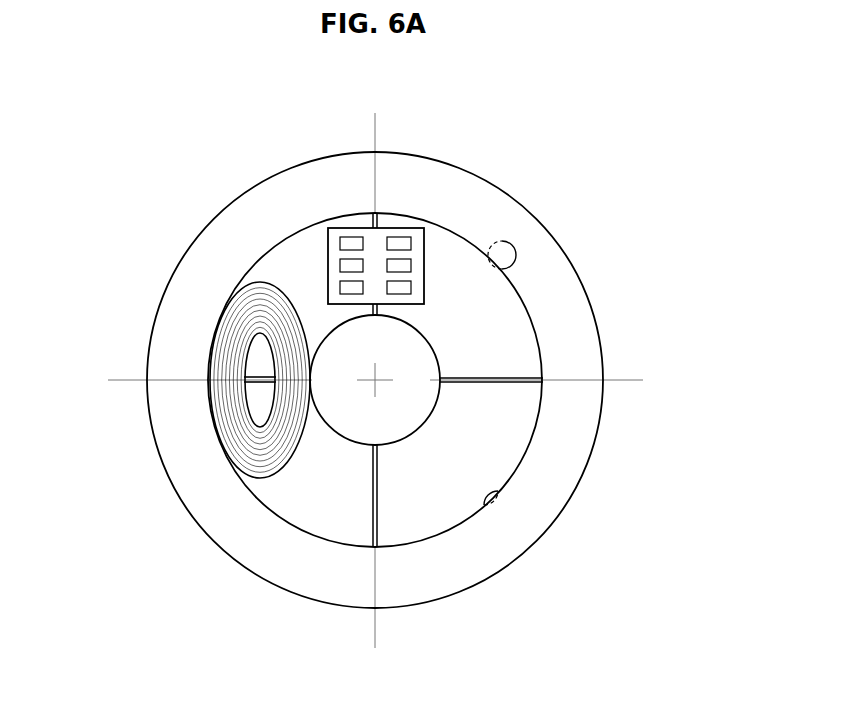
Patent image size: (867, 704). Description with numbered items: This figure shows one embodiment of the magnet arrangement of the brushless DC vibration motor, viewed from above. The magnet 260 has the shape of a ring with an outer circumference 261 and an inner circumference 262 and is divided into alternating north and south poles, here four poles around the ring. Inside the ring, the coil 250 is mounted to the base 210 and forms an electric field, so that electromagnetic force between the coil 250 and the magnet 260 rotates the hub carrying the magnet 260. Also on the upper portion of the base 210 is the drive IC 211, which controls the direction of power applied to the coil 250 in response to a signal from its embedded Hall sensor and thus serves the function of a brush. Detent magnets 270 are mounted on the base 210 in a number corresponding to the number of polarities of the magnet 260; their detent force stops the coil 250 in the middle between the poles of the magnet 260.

The base 210 is at (477, 557).
The drive IC 211 is at (352, 234).
The coil 250 is at (233, 338).
The magnet 260 is at (294, 254).
The outer circumference 261 is at (525, 298).
The inner circumference 262 is at (430, 366).
The detent magnet 270 is at (507, 250).